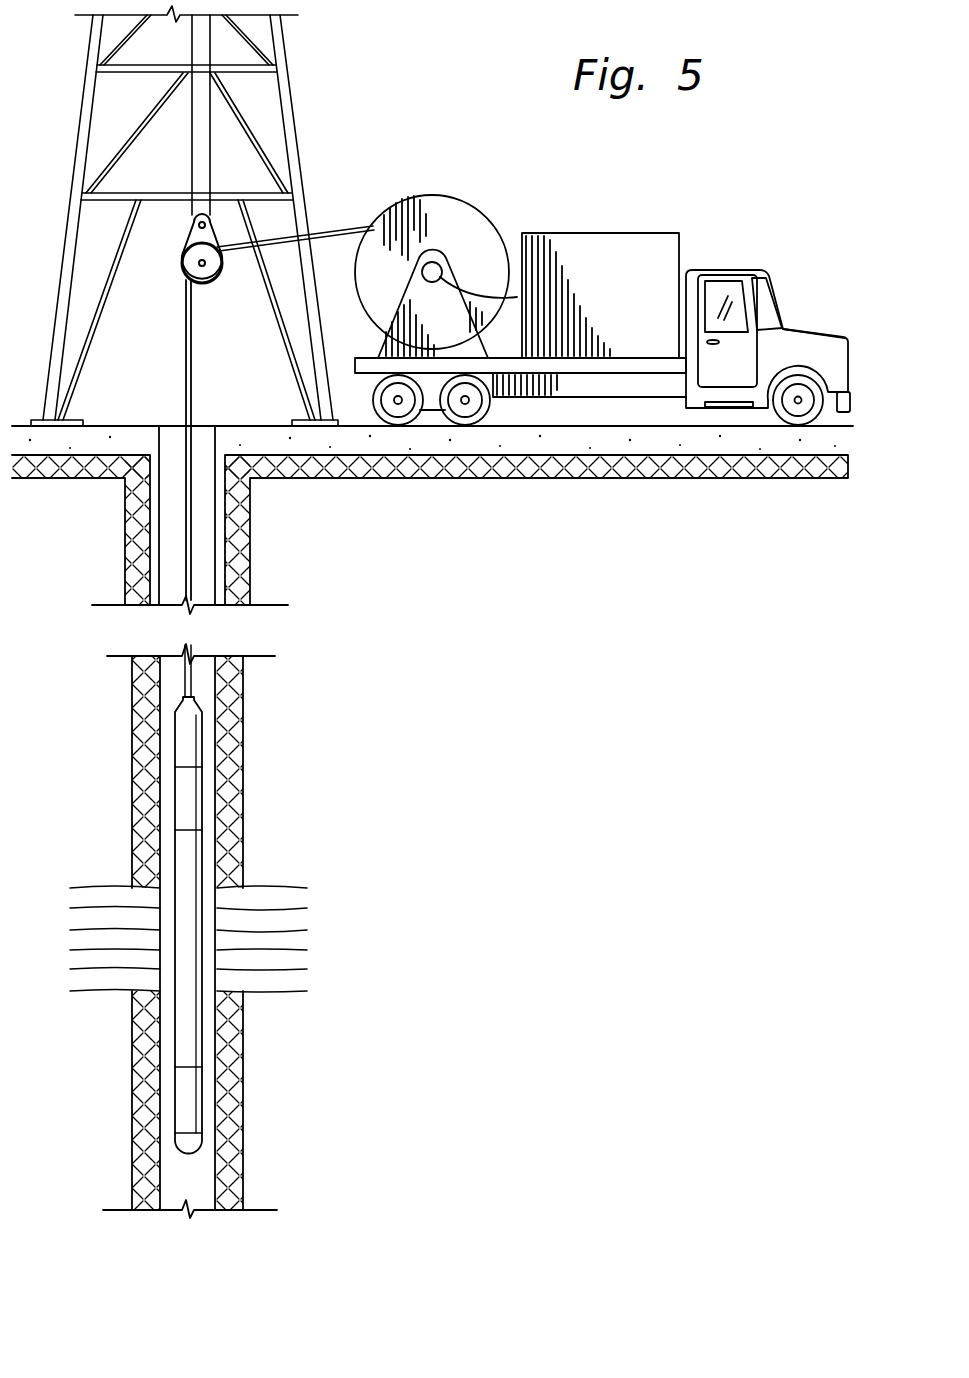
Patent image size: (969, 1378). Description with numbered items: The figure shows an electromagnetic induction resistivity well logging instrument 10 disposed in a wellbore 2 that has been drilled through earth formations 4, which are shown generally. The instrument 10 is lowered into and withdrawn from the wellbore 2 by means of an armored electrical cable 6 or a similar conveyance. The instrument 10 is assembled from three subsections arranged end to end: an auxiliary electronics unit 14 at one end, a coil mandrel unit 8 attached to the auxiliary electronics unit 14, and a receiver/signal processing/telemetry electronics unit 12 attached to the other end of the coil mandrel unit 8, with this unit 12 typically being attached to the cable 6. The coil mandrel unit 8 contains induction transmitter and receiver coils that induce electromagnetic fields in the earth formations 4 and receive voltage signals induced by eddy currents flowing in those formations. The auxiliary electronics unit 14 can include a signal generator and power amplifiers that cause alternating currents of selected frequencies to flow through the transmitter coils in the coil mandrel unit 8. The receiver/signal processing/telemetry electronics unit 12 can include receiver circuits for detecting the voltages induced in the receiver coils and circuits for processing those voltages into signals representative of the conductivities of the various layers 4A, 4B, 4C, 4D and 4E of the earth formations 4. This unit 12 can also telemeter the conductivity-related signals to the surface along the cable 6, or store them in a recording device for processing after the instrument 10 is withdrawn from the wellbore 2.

The wellbore 2 is at (200, 687).
The earth formations 4 is at (197, 940).
The layer of the earth formations 4A is at (305, 891).
The layer of the earth formations 4B is at (305, 913).
The layer of the earth formations 4C is at (305, 937).
The layer of the earth formations 4D is at (305, 961).
The layer of the earth formations 4E is at (305, 985).
The armored electrical cable 6 is at (185, 688).
The coil mandrel unit 8 is at (187, 1033).
The electromagnetic induction resistivity well logging instrument 10 is at (209, 748).
The receiver/signal processing/telemetry electronics unit 12 is at (200, 795).
The auxiliary electronics unit 14 is at (202, 1108).